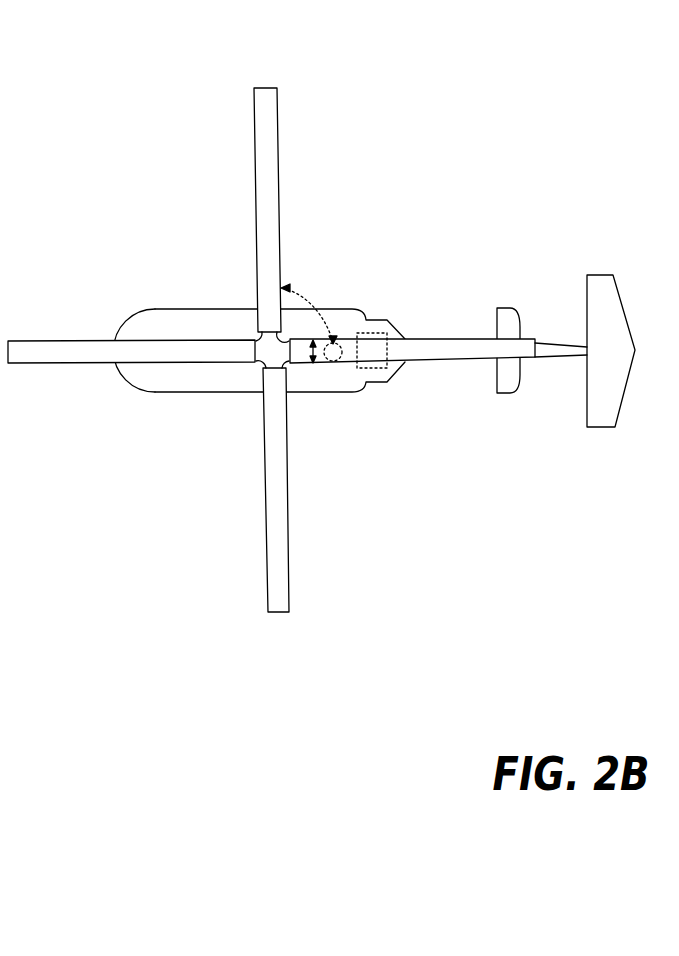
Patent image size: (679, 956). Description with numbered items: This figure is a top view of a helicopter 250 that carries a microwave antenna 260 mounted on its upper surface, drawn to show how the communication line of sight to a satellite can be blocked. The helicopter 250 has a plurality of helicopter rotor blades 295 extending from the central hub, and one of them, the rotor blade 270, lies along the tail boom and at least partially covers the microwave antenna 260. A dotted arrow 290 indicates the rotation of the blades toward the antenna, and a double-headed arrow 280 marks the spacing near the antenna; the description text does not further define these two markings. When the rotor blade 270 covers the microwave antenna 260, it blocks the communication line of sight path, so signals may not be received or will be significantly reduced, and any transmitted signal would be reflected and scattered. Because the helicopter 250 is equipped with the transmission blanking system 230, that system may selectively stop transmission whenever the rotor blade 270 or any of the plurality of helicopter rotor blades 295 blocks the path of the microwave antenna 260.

The helicopter 250 is at (62, 106).
The plurality of helicopter rotor blades 295 is at (273, 320).
The blade rotation direction 290 is at (312, 298).
The microwave antenna 260 is at (341, 340).
The offset distance 280 is at (311, 352).
The transmission blanking system 230 is at (373, 368).
The rotor blade 270 is at (439, 345).